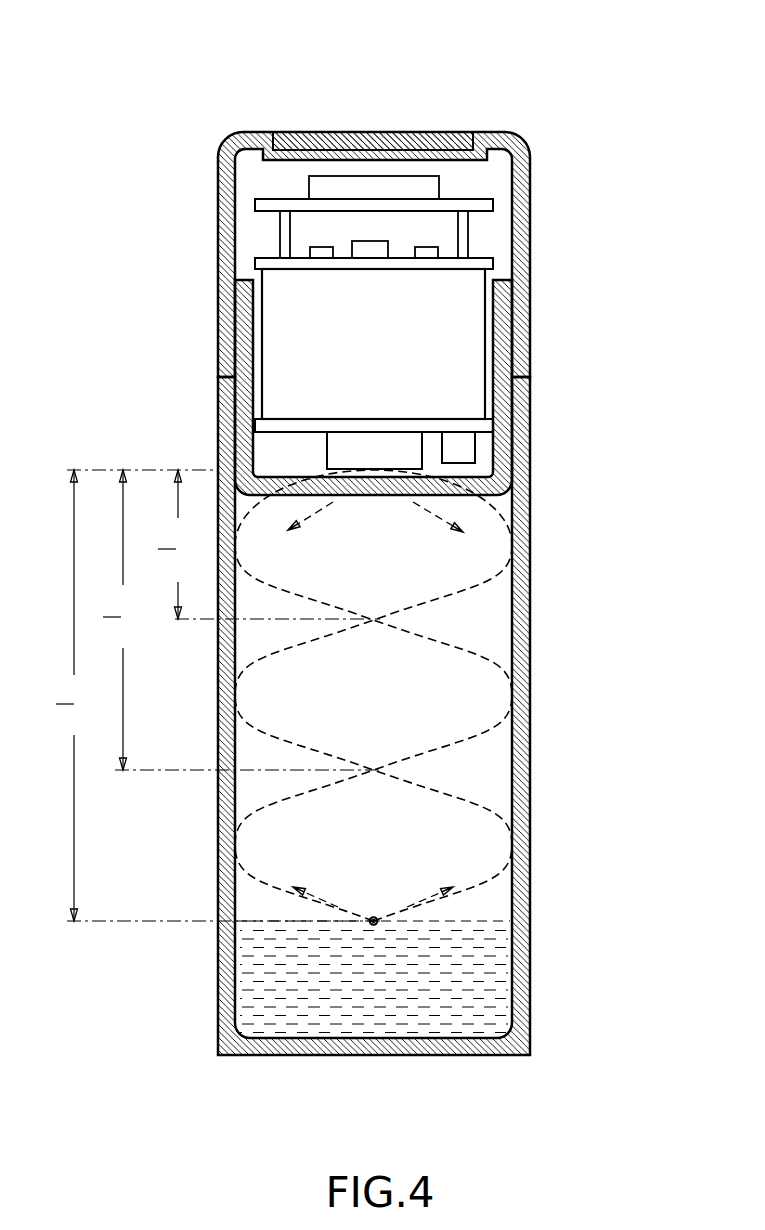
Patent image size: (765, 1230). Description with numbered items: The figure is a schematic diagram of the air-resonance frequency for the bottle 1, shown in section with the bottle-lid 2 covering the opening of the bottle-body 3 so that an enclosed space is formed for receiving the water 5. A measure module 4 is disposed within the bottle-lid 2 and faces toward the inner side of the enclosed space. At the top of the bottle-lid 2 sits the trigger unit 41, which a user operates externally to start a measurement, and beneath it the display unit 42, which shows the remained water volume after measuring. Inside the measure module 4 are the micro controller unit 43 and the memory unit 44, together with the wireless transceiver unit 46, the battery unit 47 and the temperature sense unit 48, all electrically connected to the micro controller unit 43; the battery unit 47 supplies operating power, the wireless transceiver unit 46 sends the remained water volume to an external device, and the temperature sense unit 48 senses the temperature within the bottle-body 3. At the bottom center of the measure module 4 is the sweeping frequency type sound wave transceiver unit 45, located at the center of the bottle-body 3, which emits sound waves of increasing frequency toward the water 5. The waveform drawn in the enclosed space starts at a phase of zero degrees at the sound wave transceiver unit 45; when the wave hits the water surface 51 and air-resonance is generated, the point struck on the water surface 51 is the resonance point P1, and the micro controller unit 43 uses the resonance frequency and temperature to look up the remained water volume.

The bottle 1 is at (373, 27).
The bottle-lid 2 is at (510, 150).
The bottle-body 3 is at (532, 738).
The measure module 4 is at (258, 187).
The trigger unit 41 is at (387, 145).
The display unit 42 is at (430, 187).
The micro controller unit 43 is at (370, 248).
The memory unit 44 is at (322, 253).
The sweeping frequency type sound wave transceiver unit 45 is at (384, 443).
The wireless transceiver unit 46 is at (425, 250).
The battery unit 47 is at (442, 336).
The temperature sense unit 48 is at (462, 448).
The water 5 is at (468, 1010).
The water surface 51 is at (483, 922).
The resonance point P1 is at (373, 921).